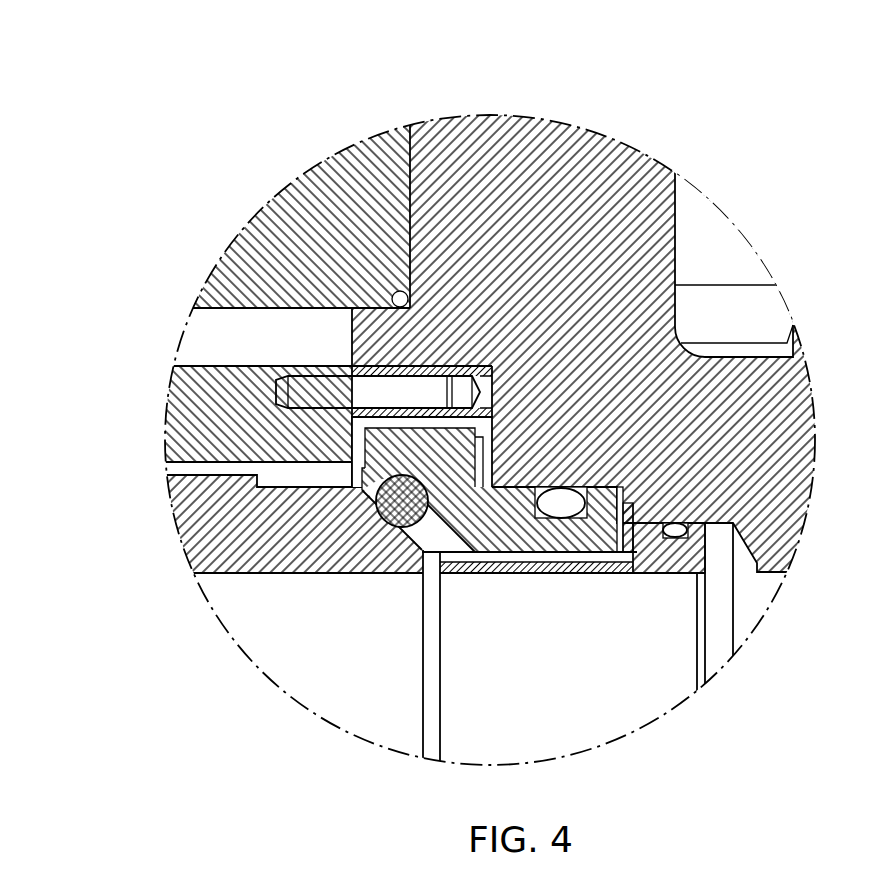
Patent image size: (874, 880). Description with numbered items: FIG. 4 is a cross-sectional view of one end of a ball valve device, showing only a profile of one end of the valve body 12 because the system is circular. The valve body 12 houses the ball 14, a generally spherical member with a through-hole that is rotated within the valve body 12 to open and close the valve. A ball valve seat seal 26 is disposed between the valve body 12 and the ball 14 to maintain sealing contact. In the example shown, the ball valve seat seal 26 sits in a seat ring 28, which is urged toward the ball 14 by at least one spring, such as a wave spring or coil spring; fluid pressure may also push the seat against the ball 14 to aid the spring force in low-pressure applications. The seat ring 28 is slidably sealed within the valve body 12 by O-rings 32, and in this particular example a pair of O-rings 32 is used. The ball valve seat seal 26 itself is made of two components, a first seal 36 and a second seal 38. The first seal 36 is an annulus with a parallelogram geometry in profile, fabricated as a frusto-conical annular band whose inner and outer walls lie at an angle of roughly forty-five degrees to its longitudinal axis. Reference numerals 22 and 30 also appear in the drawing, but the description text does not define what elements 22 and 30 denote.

The valve body 12 is at (323, 192).
The ball 14 is at (190, 515).
The cover body 22 is at (638, 242).
The ball valve seat seal 26 is at (352, 558).
The seat ring 28 is at (508, 535).
The bracket 30 is at (488, 458).
The O-rings 32 is at (680, 530).
The first seal 36 is at (395, 540).
The second seal 38 is at (375, 517).